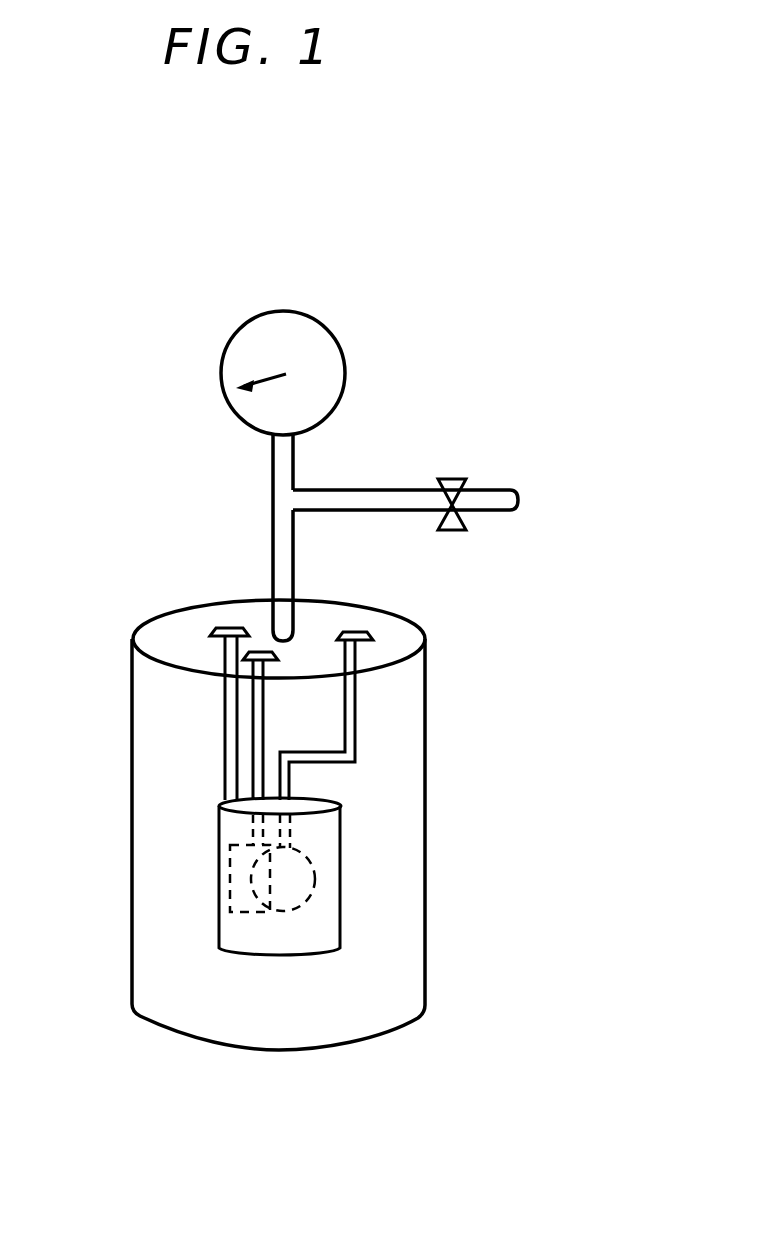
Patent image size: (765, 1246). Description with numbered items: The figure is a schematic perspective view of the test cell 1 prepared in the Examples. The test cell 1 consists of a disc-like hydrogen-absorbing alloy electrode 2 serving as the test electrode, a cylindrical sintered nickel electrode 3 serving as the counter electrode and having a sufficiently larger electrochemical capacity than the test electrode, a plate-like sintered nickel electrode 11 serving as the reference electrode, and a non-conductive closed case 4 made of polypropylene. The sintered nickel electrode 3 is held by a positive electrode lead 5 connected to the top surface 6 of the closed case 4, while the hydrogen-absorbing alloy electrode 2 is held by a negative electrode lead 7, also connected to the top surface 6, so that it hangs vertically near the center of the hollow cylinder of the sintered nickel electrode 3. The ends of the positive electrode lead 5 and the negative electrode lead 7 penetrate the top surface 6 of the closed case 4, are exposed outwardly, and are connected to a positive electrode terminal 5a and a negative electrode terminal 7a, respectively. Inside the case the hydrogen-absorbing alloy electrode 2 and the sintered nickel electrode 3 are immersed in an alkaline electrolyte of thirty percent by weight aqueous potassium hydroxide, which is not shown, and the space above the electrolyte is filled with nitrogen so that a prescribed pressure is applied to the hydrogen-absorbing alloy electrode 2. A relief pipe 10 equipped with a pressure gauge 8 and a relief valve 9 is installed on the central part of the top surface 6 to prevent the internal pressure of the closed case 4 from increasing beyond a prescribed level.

The test cell 1 is at (330, 283).
The hydrogen-absorbing alloy electrode 2 is at (315, 868).
The sintered nickel electrode 3 is at (216, 886).
The closed case 4 is at (425, 787).
The positive electrode lead 5 is at (220, 727).
The positive electrode terminal 5a is at (217, 637).
The top surface 6 is at (397, 640).
The negative electrode lead 7 is at (355, 723).
The negative electrode terminal 7a is at (354, 640).
The pressure gauge 8 is at (328, 330).
The relief valve 9 is at (455, 478).
The relief pipe 10 is at (363, 488).
The sintered nickel electrode (reference electrode) 11 is at (250, 915).